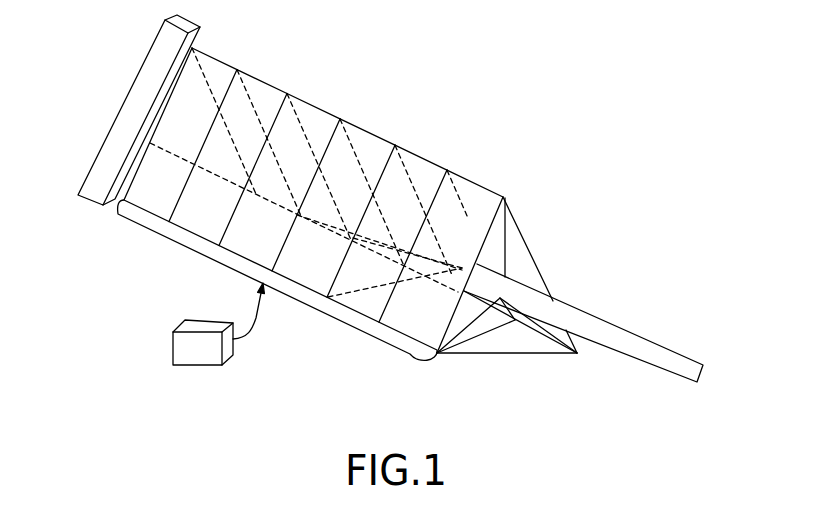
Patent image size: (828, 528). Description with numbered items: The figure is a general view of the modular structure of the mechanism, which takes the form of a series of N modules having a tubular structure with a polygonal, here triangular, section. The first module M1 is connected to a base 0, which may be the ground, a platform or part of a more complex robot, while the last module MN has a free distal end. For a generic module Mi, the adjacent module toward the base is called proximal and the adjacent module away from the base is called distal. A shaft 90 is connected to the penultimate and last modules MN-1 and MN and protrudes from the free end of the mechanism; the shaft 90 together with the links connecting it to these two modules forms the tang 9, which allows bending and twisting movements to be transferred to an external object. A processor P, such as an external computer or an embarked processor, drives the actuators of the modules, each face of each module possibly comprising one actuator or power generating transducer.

The base 0 is at (82, 198).
The first module M1 is at (215, 58).
The generic module Mi is at (310, 102).
The penultimate module MN-1 is at (415, 155).
The last module MN is at (473, 182).
The tang 9 is at (543, 250).
The shaft 90 is at (597, 319).
The processor P is at (173, 348).